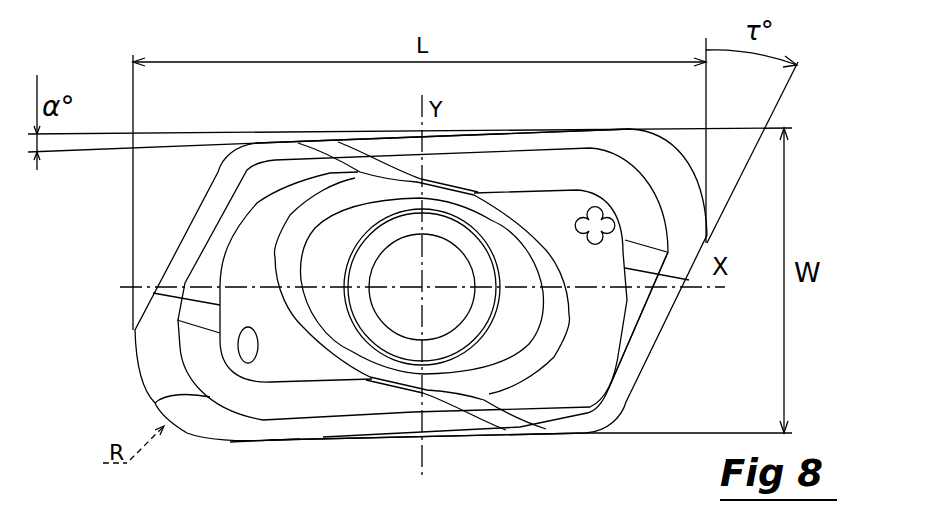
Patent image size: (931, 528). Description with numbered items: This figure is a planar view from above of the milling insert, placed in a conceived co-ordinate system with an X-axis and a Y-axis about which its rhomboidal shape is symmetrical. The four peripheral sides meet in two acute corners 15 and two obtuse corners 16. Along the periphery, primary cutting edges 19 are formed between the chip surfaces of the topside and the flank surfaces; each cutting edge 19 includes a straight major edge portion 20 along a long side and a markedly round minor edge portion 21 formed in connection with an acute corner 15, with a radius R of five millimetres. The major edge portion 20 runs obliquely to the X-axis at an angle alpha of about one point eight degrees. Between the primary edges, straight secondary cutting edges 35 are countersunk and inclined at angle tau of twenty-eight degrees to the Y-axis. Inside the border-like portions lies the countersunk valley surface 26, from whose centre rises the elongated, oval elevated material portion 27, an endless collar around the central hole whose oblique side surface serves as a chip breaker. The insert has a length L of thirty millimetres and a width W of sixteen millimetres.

The acute corner 15 is at (697, 162).
The obtuse corner 16 is at (220, 160).
The cutting edge 19 is at (253, 442).
The major edge portion 20 is at (470, 130).
The minor edge portion 21 is at (208, 397).
The valley surface 26 is at (426, 285).
The elevated material portion 27 is at (523, 220).
The secondary cutting edge 35 is at (655, 337).